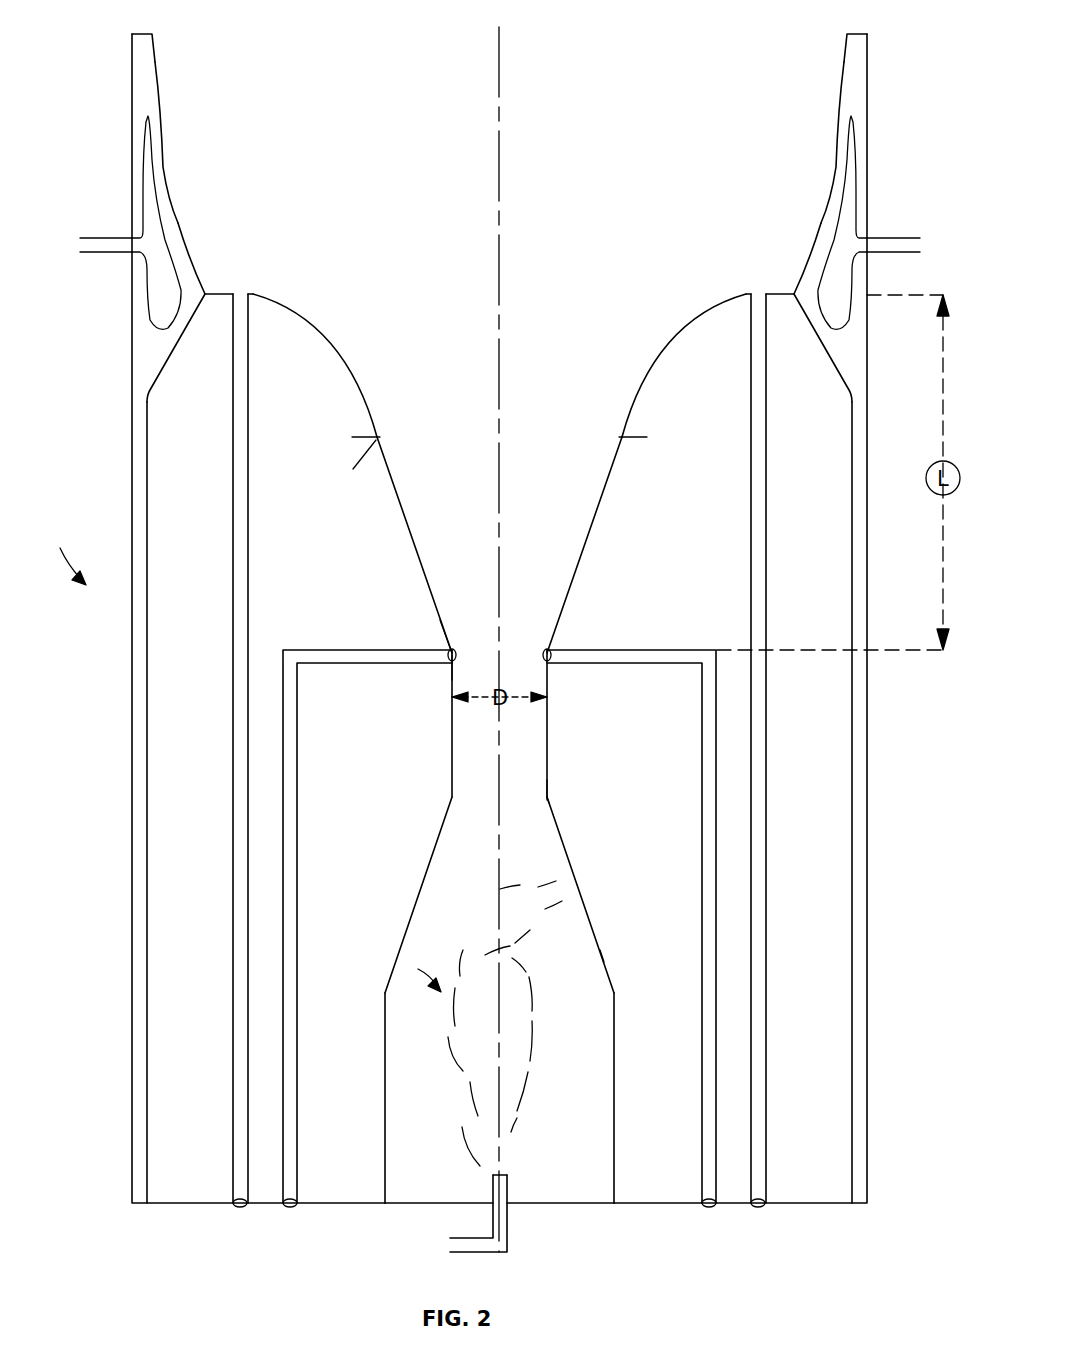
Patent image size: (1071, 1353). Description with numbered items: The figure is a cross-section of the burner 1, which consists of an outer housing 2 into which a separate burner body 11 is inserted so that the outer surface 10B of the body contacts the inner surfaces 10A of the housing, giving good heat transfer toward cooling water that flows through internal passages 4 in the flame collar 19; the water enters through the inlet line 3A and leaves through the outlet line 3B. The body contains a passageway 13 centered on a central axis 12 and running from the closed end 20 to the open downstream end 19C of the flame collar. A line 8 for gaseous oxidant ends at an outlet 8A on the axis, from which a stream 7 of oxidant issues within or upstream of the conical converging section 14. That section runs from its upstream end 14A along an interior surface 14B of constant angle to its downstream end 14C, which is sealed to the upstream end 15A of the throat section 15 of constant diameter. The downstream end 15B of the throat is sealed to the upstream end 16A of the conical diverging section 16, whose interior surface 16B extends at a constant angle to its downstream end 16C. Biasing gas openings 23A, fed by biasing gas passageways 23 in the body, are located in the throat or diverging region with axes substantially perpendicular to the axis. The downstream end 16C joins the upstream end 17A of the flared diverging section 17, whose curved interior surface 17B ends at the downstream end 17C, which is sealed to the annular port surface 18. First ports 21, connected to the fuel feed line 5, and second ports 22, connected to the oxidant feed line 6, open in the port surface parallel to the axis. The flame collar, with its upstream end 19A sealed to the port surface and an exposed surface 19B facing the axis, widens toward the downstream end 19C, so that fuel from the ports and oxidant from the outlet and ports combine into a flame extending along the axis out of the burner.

The burner 1 is at (68, 554).
The outer housing 2 is at (141, 633).
The inlet line 3A is at (910, 244).
The outlet line 3B is at (88, 244).
The internal passages 4 is at (170, 302).
The fuel feed line 5 is at (760, 1211).
The oxidant feed line 6 is at (238, 1211).
The stream of oxidant 7 is at (423, 969).
The line for gaseous oxidant 8 is at (501, 1216).
The outlet 8A is at (508, 1177).
The inner surfaces 10A is at (160, 377).
The outer surface 10B is at (174, 358).
The burner body 11 is at (200, 537).
The central axis 12 is at (500, 50).
The passageway 13 is at (423, 1042).
The conical converging section 14 is at (523, 981).
The upstream end 14A is at (581, 981).
The interior surface 14B is at (430, 870).
The downstream end 14C is at (548, 811).
The throat section 15 is at (500, 727).
The upstream end 15A is at (551, 804).
The downstream end 15B is at (450, 667).
The conical diverging section 16 is at (494, 545).
The upstream end 16A is at (447, 650).
The interior surface 16B is at (405, 514).
The downstream end 16C is at (343, 465).
The flared diverging section 17 is at (499, 348).
The upstream end 17A is at (378, 438).
The interior surface 17B is at (338, 352).
The downstream end 17C is at (262, 297).
The port surface 18 is at (234, 292).
The flame collar 19 is at (457, 151).
The upstream end 19A is at (205, 290).
The exposed surface 19B is at (164, 166).
The downstream end 19C is at (154, 46).
The closed end 20 is at (398, 1200).
The first ports 21 is at (244, 296).
The second ports 22 is at (753, 294).
The biasing gas passageways 23 is at (499, 923).
The biasing gas openings 23A is at (454, 651).